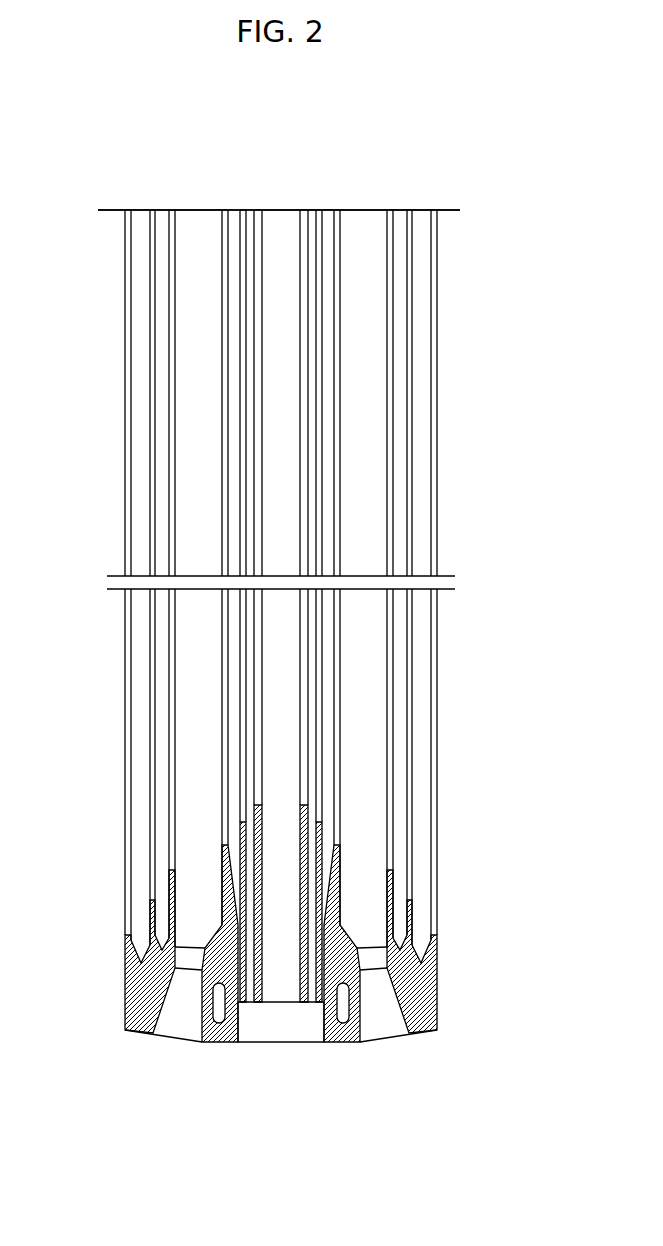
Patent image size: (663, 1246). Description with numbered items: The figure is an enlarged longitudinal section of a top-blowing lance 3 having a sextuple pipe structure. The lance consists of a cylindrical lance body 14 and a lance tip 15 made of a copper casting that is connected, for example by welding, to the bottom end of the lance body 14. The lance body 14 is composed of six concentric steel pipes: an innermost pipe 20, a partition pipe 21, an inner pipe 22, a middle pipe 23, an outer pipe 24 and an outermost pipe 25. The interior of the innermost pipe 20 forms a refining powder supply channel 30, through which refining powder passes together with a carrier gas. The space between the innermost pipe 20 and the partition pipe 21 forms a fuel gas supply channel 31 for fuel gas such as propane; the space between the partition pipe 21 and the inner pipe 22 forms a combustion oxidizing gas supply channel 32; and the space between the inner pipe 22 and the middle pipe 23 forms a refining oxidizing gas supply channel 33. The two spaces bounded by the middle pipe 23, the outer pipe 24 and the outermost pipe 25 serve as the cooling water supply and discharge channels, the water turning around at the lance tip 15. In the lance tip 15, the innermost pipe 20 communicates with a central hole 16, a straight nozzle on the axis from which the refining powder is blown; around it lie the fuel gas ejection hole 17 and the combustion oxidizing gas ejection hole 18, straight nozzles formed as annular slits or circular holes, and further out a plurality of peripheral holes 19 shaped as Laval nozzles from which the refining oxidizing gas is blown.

The top-blowing lance 3 is at (502, 237).
The lance body 14 is at (463, 405).
The lance tip 15 is at (462, 978).
The central hole 16 is at (262, 985).
The fuel gas ejection hole 17 is at (255, 1005).
The combustion oxidizing gas ejection hole 18 is at (240, 1005).
The peripheral holes 19 is at (162, 1020).
The innermost pipe 20 is at (255, 493).
The partition pipe 21 is at (243, 448).
The inner pipe 22 is at (223, 407).
The middle pipe 23 is at (170, 357).
The outer pipe 24 is at (150, 318).
The outermost pipe 25 is at (125, 279).
The refining powder supply channel 30 is at (282, 220).
The fuel gas supply channel 31 is at (251, 220).
The combustion oxidizing gas supply channel 32 is at (233, 220).
The refining oxidizing gas supply channel 33 is at (200, 220).